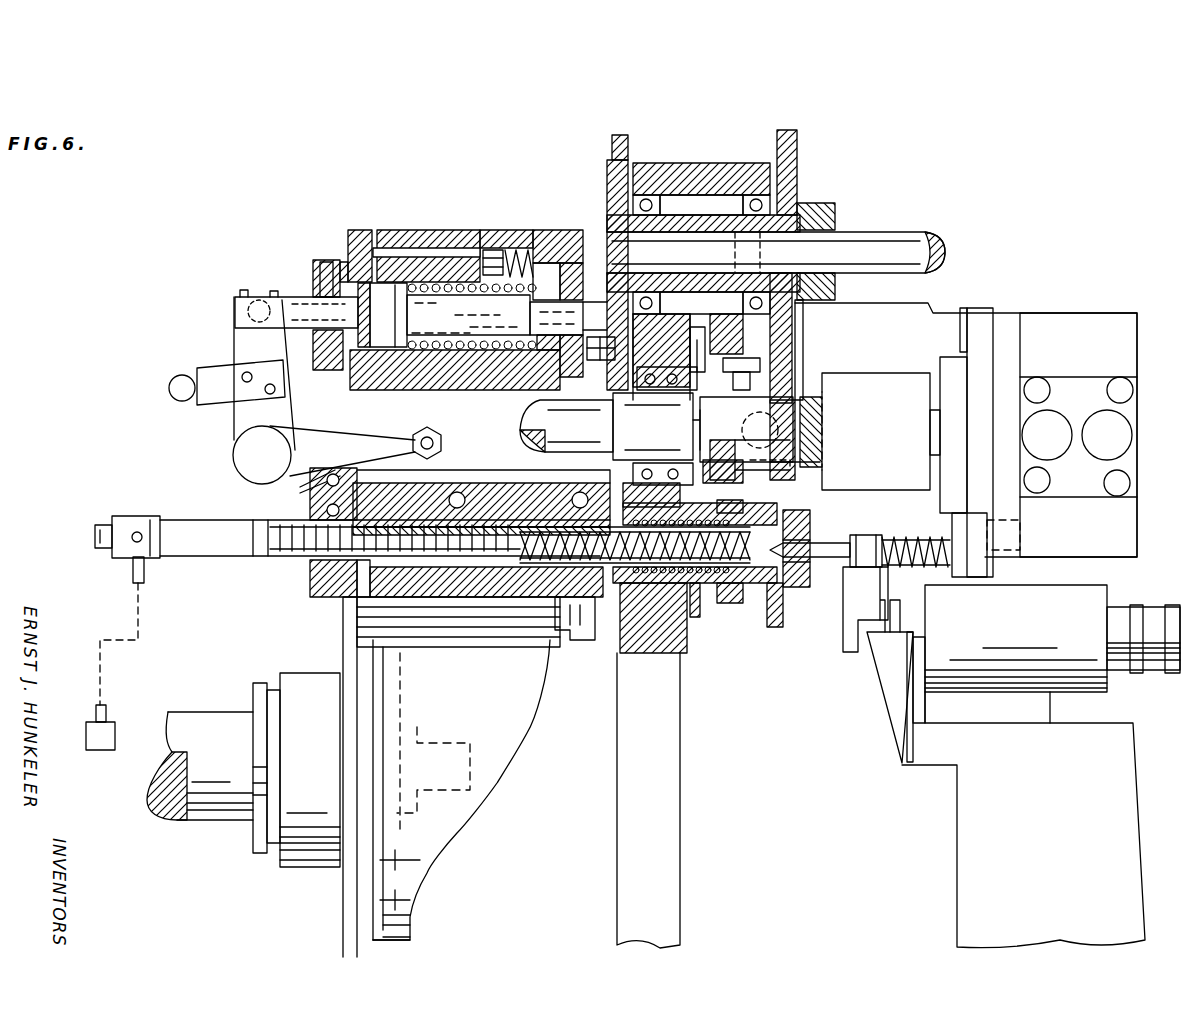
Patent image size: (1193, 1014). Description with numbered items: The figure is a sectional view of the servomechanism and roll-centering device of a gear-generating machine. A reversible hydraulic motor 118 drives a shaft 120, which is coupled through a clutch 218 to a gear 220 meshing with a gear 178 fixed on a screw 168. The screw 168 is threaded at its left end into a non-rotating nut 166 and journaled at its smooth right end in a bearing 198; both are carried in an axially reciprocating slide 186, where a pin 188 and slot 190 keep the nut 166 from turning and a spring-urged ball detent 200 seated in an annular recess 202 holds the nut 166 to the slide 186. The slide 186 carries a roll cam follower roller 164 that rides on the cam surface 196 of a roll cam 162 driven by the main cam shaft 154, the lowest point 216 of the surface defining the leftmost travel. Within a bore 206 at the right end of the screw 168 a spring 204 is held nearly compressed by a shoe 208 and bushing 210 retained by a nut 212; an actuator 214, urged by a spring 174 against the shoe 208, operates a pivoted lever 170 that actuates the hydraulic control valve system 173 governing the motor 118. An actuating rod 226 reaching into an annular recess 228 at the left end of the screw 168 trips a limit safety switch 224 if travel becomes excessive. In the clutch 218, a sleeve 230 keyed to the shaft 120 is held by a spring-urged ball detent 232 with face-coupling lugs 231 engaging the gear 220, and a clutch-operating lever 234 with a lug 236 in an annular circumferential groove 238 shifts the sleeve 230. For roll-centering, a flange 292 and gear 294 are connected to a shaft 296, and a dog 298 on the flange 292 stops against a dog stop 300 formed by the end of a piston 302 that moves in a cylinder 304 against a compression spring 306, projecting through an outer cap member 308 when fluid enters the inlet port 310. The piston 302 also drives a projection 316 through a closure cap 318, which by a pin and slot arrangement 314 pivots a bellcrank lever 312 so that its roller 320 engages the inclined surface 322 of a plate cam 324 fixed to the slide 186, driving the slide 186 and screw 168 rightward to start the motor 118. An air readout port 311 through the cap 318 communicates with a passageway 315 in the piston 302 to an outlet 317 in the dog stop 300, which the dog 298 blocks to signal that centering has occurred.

The reversible hydraulic motor 118 is at (920, 378).
The shaft 120 is at (530, 412).
The main cam shaft 154 is at (212, 712).
The roll cam 162 is at (548, 720).
The roll cam follower roller 164 is at (600, 638).
The nut 166 is at (320, 562).
The screw 168 is at (205, 520).
The pivoted lever 170 is at (850, 615).
The hydraulic control valve system 173 is at (947, 653).
The spring 174 is at (900, 540).
The gear 178 is at (772, 630).
The slide 186 is at (347, 597).
The pin 188 is at (363, 600).
The slot 190 is at (430, 598).
The cam surface 196 is at (498, 778).
The bearing 198 is at (728, 510).
The ball detent 200 is at (310, 497).
The annular recess 202 is at (360, 478).
The spring 204 is at (722, 617).
The bore 206 is at (650, 655).
The shoe 208 is at (768, 590).
The bushing 210 is at (805, 540).
The nut 212 is at (810, 588).
The actuator 214 is at (853, 537).
The lowest point 216 is at (412, 934).
The clutch 218 is at (712, 365).
The gear 220 is at (792, 405).
The limit safety switch 224 is at (112, 722).
The actuating rod 226 is at (145, 578).
The annular recess 228 is at (137, 518).
The sleeve 230 is at (765, 428).
The face-coupling lugs 231 is at (800, 432).
The spring-urged ball detent 232 is at (690, 432).
The clutch-operating lever 234 is at (764, 362).
The lug 236 is at (778, 382).
The annular circumferential groove 238 is at (815, 462).
The flange 292 is at (610, 180).
The gear 294 is at (797, 165).
The shaft 296 is at (890, 238).
The dog 298 is at (602, 360).
The dog stop 300 is at (582, 327).
The piston 302 is at (470, 300).
The cylinder 304 is at (405, 375).
The compression spring 306 is at (487, 352).
The outer cap member 308 is at (567, 257).
The inlet port 310 is at (370, 238).
The air readout port 311 is at (318, 285).
The bellcrank lever 312 is at (240, 410).
The pin and slot arrangement 314 is at (256, 300).
The passageway 315 is at (394, 258).
The projection 316 is at (293, 333).
The outlet 317 is at (622, 327).
The closure cap 318 is at (320, 265).
The roller 320 is at (415, 428).
The inclined surface 322 is at (440, 472).
The plate cam 324 is at (590, 483).